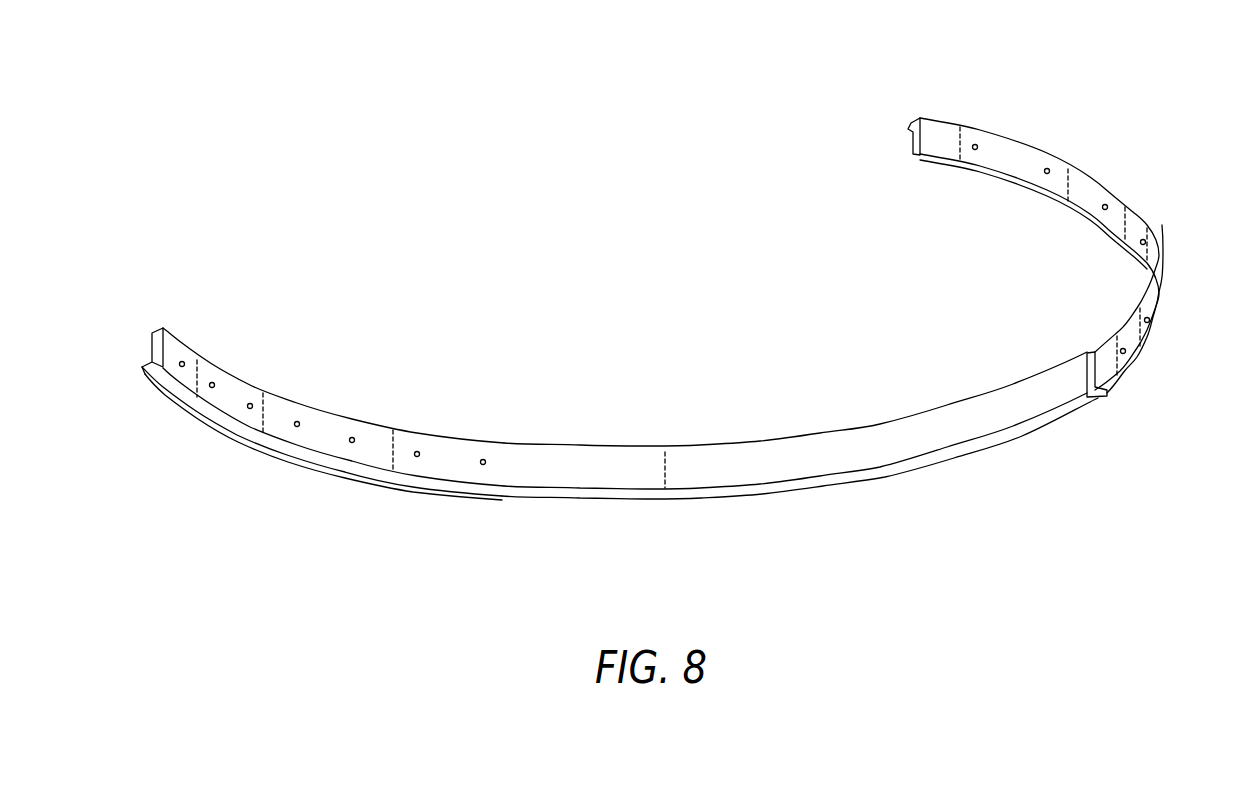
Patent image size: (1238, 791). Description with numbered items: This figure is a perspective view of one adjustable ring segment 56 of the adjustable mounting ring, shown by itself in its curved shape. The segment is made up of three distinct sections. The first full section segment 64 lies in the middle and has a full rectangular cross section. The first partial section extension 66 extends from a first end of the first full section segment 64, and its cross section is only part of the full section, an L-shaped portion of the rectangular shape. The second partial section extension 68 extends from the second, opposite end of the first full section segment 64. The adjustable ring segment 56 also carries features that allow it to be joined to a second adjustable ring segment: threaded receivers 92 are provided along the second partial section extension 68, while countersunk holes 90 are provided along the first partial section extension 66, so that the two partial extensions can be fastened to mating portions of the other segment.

The adjustable ring segment 56 is at (686, 317).
The first full section segment 64 is at (1087, 283).
The first partial section extension 66 is at (1069, 214).
The second partial section extension 68 is at (323, 400).
The countersunk holes 90 is at (1106, 206).
The threaded receivers 92 is at (320, 383).